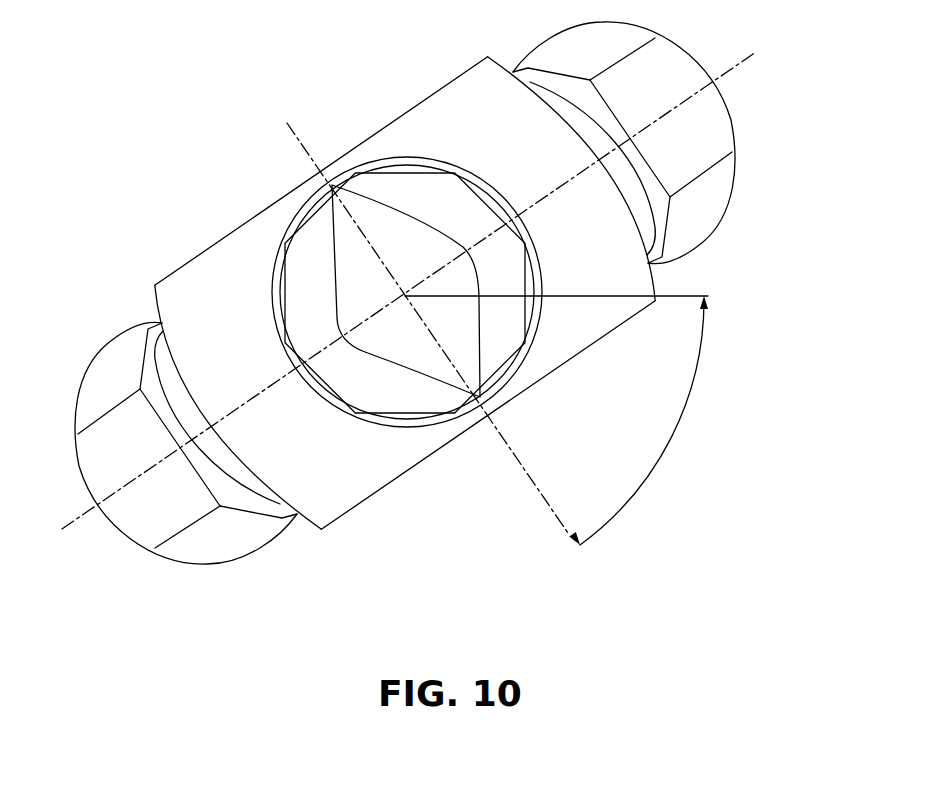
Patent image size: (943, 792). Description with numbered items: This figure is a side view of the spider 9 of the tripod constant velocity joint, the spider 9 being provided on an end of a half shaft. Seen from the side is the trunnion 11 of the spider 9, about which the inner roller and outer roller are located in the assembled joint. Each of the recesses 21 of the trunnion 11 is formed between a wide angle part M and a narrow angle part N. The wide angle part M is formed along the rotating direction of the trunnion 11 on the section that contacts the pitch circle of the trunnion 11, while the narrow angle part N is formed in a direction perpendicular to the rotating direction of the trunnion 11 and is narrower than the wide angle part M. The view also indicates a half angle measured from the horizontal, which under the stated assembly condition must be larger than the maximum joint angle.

The spider 9 is at (432, 95).
The trunnion 11 is at (733, 192).
The recess 21 is at (398, 174).
The wide angle part M is at (493, 187).
The narrow angle part N is at (332, 185).